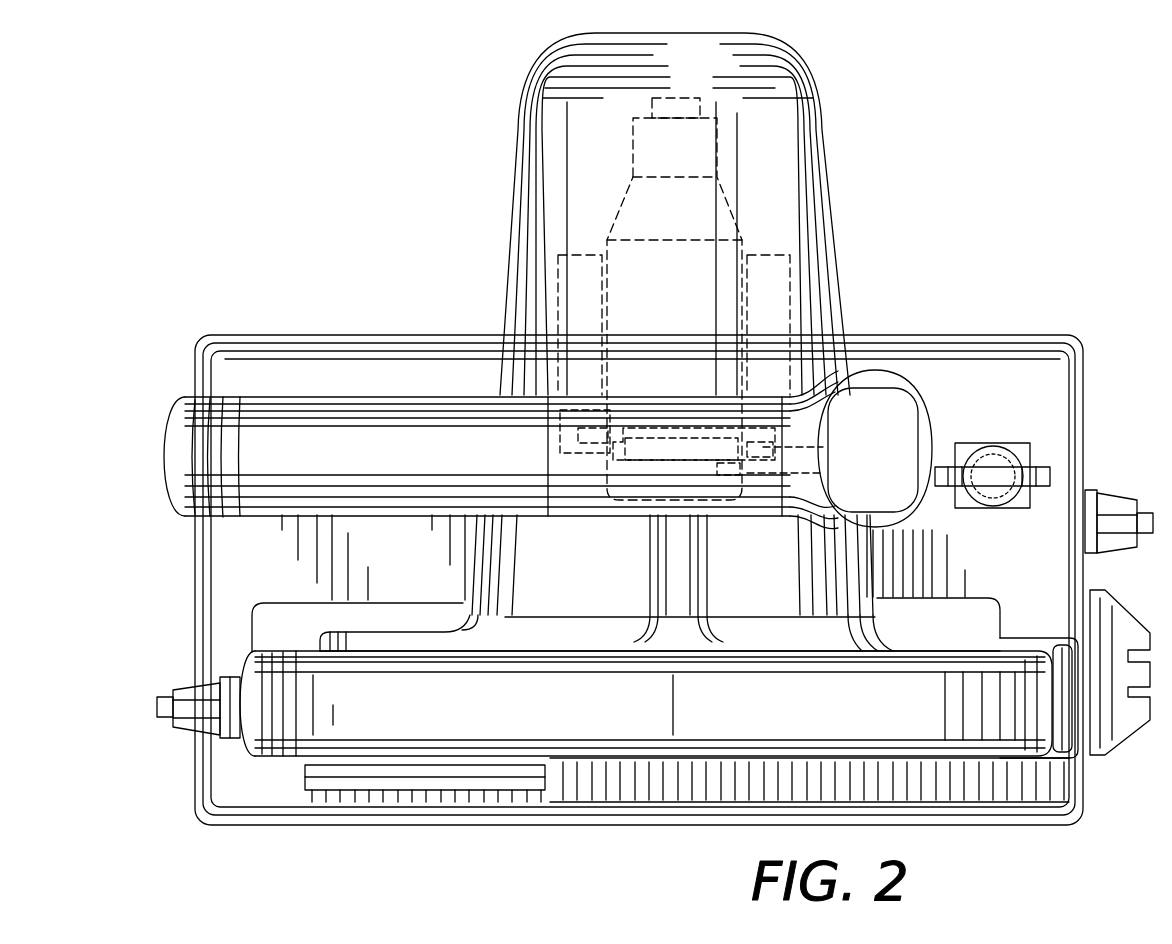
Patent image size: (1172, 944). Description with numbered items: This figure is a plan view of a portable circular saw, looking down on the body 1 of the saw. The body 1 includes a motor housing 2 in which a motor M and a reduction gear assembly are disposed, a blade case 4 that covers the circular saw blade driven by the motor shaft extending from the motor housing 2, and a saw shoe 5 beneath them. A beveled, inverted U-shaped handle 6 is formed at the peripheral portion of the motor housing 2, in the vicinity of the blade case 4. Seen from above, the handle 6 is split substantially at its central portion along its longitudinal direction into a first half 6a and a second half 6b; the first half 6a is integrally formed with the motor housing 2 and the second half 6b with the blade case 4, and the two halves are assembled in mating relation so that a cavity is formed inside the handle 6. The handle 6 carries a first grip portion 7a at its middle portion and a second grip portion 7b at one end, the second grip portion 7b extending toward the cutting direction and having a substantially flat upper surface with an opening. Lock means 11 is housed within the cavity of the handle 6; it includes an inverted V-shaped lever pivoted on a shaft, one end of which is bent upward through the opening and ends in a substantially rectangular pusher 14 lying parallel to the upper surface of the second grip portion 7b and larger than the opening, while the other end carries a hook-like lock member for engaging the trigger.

The body 1 is at (438, 376).
The motor housing 2 is at (803, 97).
The motor M is at (630, 203).
The blade case 4 is at (440, 747).
The saw shoe 5 is at (218, 572).
The handle 6 is at (373, 413).
The first half 6a is at (261, 417).
The second half 6b is at (177, 504).
The first grip portion 7a is at (407, 432).
The second grip portion 7b is at (882, 378).
The lock means 11 is at (672, 430).
The pusher 14 is at (890, 418).